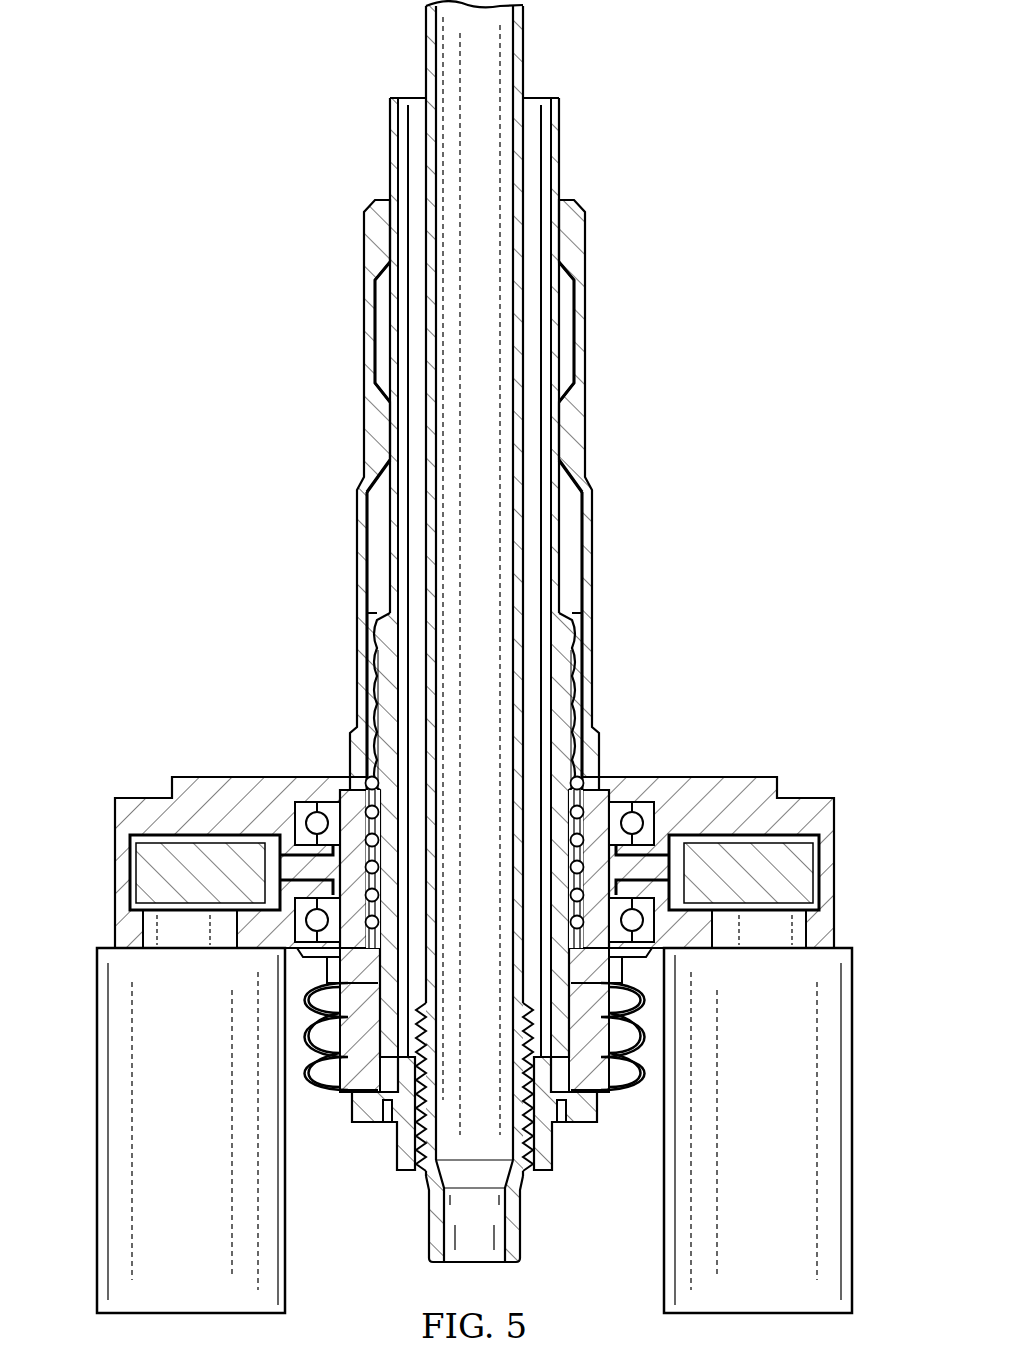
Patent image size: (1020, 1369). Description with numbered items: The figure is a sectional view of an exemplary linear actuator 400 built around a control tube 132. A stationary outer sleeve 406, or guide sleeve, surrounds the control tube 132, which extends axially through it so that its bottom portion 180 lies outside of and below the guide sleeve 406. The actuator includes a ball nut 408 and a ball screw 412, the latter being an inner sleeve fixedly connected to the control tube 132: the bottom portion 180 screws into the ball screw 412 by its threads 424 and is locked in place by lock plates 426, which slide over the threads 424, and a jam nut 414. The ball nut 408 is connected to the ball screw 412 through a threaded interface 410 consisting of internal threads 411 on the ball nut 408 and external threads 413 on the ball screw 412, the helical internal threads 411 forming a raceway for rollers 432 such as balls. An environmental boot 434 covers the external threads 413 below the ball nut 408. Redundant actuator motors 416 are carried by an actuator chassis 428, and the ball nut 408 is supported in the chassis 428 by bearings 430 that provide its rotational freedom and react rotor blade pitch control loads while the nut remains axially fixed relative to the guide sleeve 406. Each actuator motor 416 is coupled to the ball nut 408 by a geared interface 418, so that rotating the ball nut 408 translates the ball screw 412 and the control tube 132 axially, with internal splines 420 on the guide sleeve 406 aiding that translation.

The control tube 132 is at (525, 58).
The bottom portion 180 is at (428, 1242).
The linear actuator 400 is at (794, 206).
The outer sleeve 406 is at (586, 310).
The ball nut 408 is at (593, 803).
The threaded interface 410 is at (380, 738).
The internal threads 411 is at (548, 850).
The ball screw 412 is at (390, 140).
The external threads 413 is at (574, 703).
The jam nut 414 is at (398, 1147).
The actuator motor 416 is at (97, 1130).
The geared interface 418 is at (143, 873).
The internal splines 420 is at (545, 205).
The threads 424 is at (548, 1152).
The lock plates 426 is at (563, 1123).
The actuator chassis 428 is at (137, 806).
The bearings 430 is at (308, 822).
The rollers 432 is at (378, 812).
The environmental boot 434 is at (333, 1085).